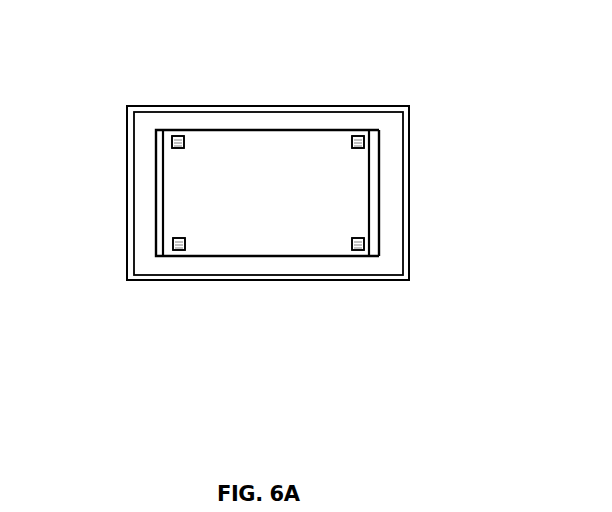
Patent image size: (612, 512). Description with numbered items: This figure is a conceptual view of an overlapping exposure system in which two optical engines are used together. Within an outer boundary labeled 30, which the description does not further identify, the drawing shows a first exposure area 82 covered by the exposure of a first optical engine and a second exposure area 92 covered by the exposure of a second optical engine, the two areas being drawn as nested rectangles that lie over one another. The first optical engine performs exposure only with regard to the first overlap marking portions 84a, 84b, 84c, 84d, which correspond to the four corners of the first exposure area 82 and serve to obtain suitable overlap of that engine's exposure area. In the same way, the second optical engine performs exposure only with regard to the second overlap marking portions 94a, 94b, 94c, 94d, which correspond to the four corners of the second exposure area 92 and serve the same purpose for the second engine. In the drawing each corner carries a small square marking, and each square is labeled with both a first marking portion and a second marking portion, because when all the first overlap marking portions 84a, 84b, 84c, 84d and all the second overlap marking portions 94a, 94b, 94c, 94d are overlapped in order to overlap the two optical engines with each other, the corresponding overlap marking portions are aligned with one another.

The display device housing 30 is at (409, 141).
The first exposure area 82 is at (156, 194).
The second exposure area 92 is at (380, 193).
The first overlap marking portion 84a is at (177, 136).
The first overlap marking portion 84b is at (179, 250).
The first overlap marking portion 84c is at (356, 136).
The first overlap marking portion 84d is at (358, 250).
The second overlap marking portion 94a is at (178, 142).
The second overlap marking portion 94b is at (179, 244).
The second overlap marking portion 94c is at (358, 142).
The second overlap marking portion 94d is at (358, 244).